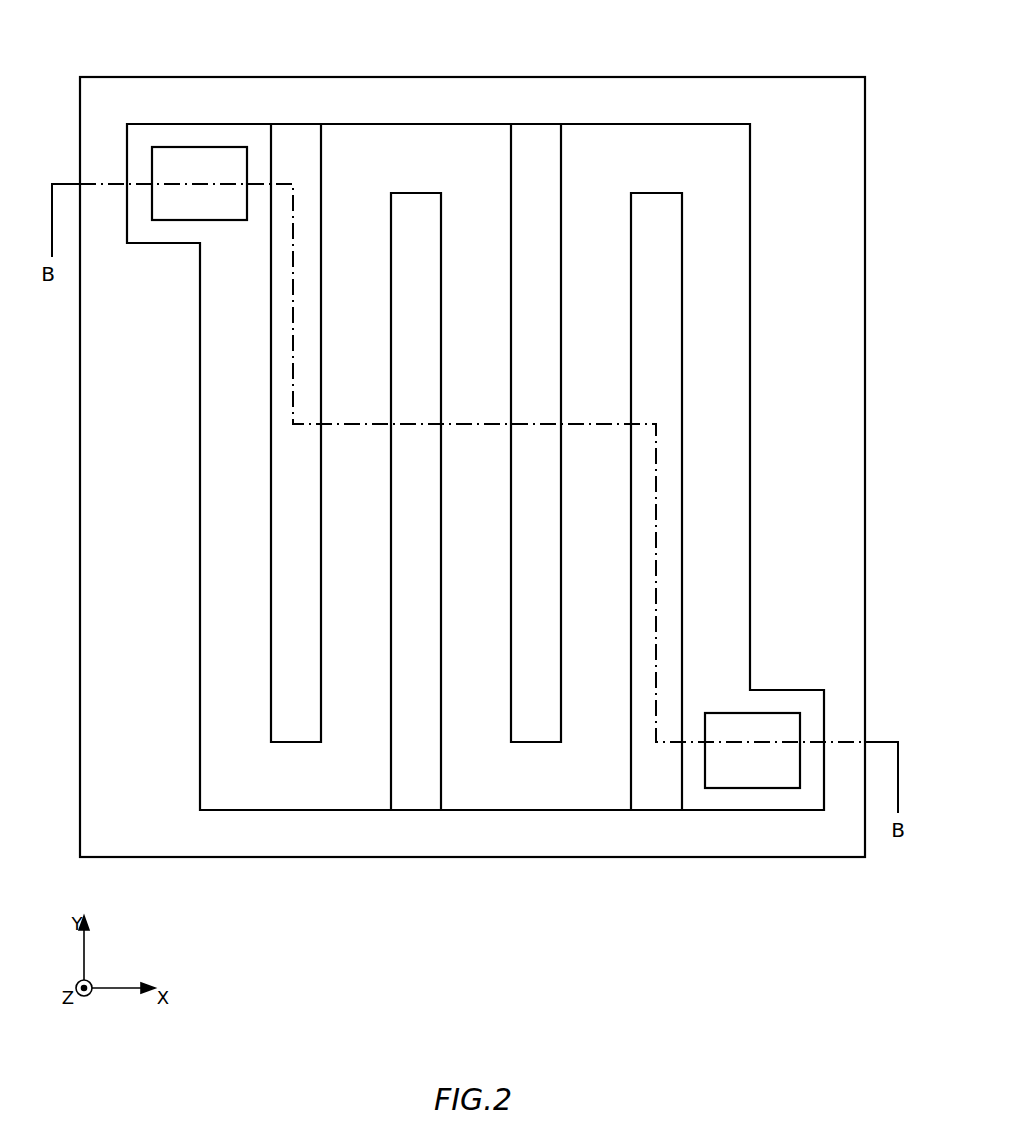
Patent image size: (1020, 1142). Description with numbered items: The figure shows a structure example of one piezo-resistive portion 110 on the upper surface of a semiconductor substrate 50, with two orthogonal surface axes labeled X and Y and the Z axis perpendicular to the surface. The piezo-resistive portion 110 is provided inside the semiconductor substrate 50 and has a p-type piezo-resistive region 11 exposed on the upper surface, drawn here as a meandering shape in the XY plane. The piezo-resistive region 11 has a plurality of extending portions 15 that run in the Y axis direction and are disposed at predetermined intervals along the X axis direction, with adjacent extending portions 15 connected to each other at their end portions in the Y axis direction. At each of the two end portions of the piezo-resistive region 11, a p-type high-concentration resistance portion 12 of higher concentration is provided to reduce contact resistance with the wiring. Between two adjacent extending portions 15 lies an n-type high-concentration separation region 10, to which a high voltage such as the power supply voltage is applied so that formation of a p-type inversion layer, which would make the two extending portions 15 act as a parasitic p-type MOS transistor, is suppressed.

The separation region 10 is at (294, 135).
The piezo-resistive region 11 is at (295, 788).
The high-concentration resistance portion 12 is at (200, 150).
The extending portion 15 is at (222, 462).
The semiconductor substrate 50 is at (803, 137).
The piezo-resistive portion 110 is at (426, 990).